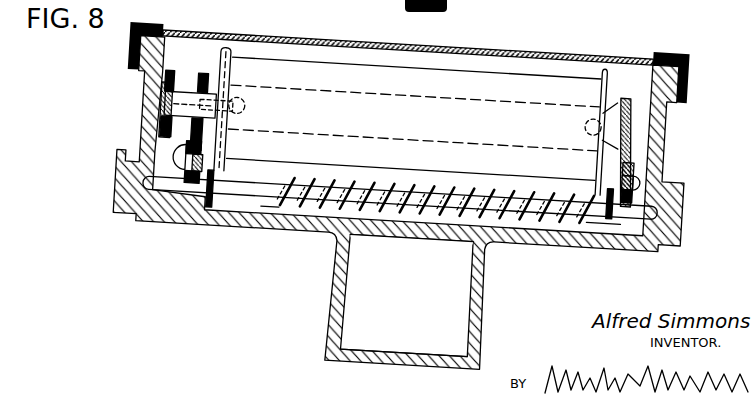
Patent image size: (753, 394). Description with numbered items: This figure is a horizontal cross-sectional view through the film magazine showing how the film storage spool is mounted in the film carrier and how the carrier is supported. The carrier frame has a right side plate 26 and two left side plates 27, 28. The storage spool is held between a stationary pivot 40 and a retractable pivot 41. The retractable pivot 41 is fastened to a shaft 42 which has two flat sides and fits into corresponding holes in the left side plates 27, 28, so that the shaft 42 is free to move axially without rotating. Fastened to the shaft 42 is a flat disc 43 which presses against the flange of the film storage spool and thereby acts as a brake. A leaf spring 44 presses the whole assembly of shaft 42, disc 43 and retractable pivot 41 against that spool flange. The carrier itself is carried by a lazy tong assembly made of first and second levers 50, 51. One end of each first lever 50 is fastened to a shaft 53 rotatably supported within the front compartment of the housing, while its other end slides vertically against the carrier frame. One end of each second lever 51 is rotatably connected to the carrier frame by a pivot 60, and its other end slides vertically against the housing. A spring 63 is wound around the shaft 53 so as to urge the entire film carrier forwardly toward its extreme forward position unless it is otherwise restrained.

The right side plate 26 is at (631, 69).
The left side plate 27 is at (204, 68).
The left side plate 28 is at (172, 68).
The stationary pivot 40 is at (590, 99).
The retractable pivot 41 is at (249, 99).
The shaft 42 is at (169, 99).
The flat disc 43 is at (228, 41).
The leaf spring 44 is at (165, 82).
The first lever 50 is at (209, 197).
The second lever 51 is at (198, 180).
The shaft 53 is at (236, 189).
The pivot 60 is at (184, 150).
The spring 63 is at (290, 197).